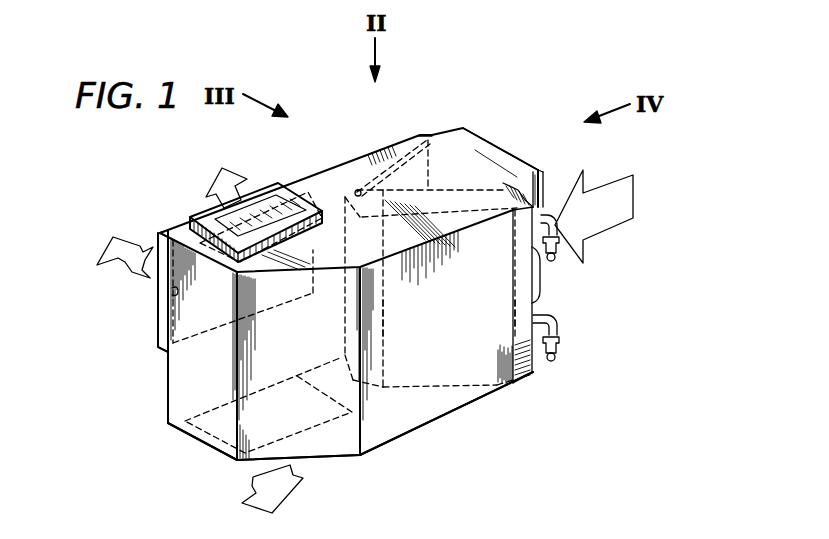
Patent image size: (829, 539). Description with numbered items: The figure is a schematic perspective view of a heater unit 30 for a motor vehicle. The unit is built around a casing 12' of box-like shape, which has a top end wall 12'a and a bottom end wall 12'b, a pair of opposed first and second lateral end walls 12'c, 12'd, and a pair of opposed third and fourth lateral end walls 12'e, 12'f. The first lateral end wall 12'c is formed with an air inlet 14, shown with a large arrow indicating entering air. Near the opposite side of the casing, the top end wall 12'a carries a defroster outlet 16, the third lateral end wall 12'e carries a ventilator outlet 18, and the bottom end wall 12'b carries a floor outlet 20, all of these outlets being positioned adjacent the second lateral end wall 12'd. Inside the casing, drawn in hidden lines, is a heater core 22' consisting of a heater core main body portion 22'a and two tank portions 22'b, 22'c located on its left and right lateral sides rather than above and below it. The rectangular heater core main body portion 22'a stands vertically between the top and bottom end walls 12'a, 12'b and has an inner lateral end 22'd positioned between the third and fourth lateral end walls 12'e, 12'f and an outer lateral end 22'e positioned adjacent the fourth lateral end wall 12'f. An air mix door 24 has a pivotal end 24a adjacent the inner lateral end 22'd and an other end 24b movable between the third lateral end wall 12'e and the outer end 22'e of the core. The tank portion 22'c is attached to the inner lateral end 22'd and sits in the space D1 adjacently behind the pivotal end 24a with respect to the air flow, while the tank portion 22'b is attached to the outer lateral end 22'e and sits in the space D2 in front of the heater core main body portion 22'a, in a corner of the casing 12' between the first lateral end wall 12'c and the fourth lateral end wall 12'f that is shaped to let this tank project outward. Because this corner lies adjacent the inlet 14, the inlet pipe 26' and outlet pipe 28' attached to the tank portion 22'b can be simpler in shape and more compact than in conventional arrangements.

The casing 12' is at (311, 335).
The top end wall 12'a is at (349, 180).
The bottom end wall 12'b is at (301, 483).
The first lateral end wall 12'c is at (514, 164).
The second lateral end wall 12'd is at (173, 431).
The third lateral end wall 12'e is at (427, 103).
The fourth lateral end wall 12'f is at (446, 423).
The air inlet 14 is at (543, 187).
The defroster outlet 16 is at (266, 197).
The ventilator outlet 18 is at (178, 288).
The floor outlet 20 is at (210, 432).
The heater core 22' is at (497, 288).
The heater core main body portion 22'a is at (505, 415).
The tank portion 22'b is at (548, 398).
The tank portion 22'c is at (388, 438).
The inner lateral end 22'd is at (416, 320).
The outer lateral end 22'e is at (490, 327).
The air mix door 24 is at (397, 157).
The pivotal end 24a is at (357, 190).
The other end 24b is at (432, 135).
The inlet pipe 26' is at (572, 253).
The outlet pipe 28' is at (569, 346).
The heater unit 30 is at (506, 101).
The space D1 is at (360, 217).
The space D2 is at (533, 372).